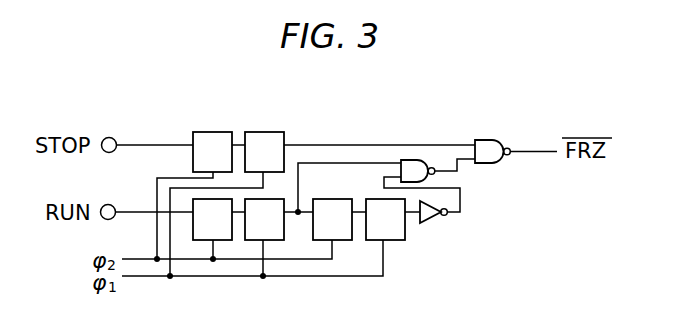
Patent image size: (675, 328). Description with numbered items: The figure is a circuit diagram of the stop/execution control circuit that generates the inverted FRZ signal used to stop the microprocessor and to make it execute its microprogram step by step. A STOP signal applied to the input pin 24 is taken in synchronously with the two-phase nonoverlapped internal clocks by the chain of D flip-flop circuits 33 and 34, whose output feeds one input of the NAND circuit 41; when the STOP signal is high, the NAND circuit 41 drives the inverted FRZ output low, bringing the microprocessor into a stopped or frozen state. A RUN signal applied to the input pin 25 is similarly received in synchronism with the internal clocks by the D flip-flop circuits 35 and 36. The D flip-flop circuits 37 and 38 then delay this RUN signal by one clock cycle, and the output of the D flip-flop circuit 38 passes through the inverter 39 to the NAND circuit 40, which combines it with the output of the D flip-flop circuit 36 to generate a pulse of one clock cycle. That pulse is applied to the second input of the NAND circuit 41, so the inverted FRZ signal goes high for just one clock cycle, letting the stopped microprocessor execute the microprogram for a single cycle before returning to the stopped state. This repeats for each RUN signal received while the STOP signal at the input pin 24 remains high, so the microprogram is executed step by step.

The input pin 24 is at (108, 137).
The input pin 25 is at (108, 204).
The D flip-flop circuit 33 is at (213, 131).
The D flip-flop circuit 34 is at (266, 131).
The D flip-flop circuit 35 is at (223, 241).
The D flip-flop circuit 36 is at (275, 241).
The D flip-flop circuit 37 is at (342, 241).
The D flip-flop circuit 38 is at (398, 241).
The inverter 39 is at (428, 223).
The NAND circuit 40 is at (418, 160).
The NAND circuit 41 is at (482, 140).